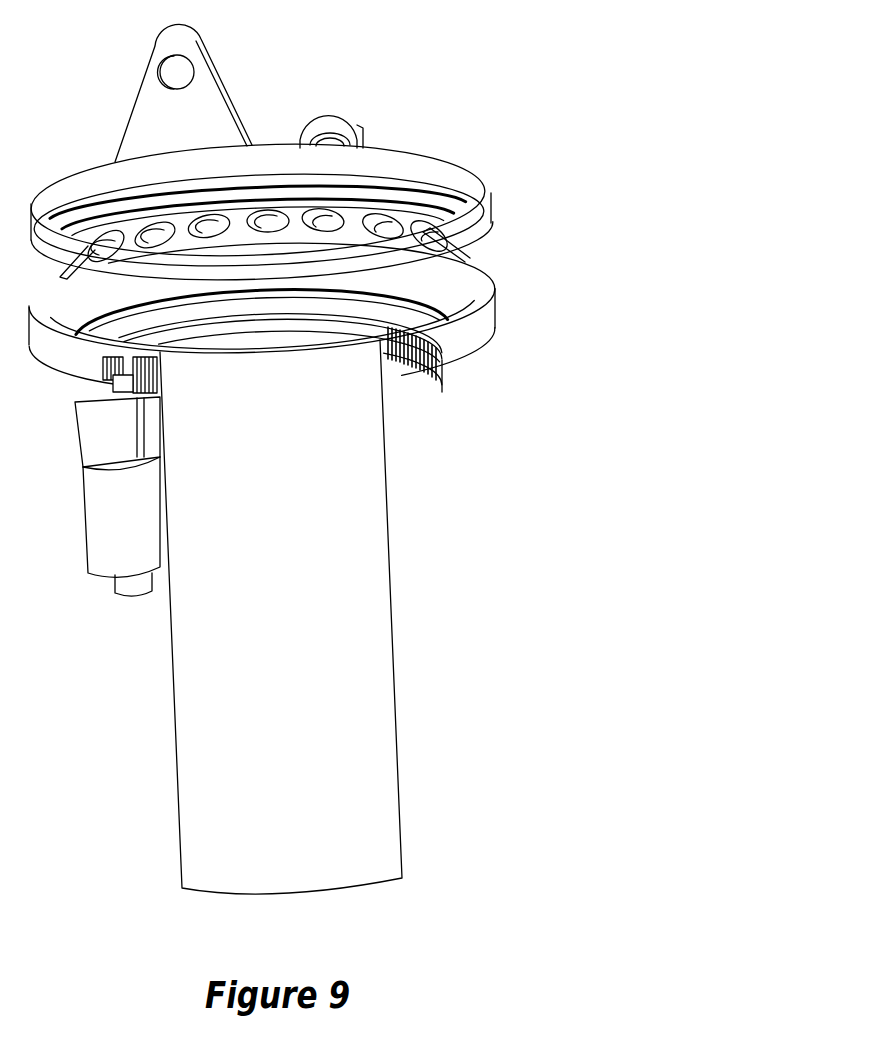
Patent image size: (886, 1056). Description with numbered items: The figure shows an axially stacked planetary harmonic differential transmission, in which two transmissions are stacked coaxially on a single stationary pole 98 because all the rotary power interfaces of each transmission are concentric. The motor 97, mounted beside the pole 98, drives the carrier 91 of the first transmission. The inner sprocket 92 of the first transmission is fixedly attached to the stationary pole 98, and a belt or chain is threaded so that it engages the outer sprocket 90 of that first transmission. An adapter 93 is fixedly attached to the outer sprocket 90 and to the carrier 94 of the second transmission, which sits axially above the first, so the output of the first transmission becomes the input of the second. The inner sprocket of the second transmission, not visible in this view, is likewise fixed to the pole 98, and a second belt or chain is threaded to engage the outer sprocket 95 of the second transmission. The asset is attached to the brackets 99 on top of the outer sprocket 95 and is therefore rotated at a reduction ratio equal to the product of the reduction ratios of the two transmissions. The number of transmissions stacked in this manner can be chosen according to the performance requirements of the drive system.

The outer sprocket 90 is at (453, 288).
The carrier 91 is at (443, 327).
The inner sprocket 92 is at (427, 343).
The adapter 93 is at (457, 253).
The carrier 94 is at (436, 195).
The outer sprocket 95 is at (440, 160).
The motor 97 is at (118, 505).
The pole 98 is at (358, 476).
The brackets 99 is at (337, 112).